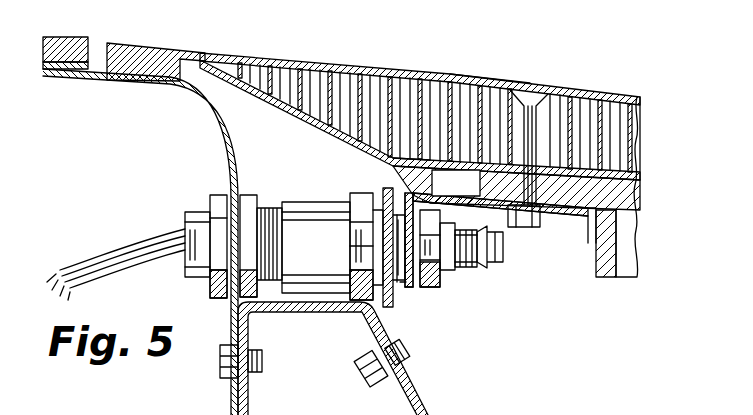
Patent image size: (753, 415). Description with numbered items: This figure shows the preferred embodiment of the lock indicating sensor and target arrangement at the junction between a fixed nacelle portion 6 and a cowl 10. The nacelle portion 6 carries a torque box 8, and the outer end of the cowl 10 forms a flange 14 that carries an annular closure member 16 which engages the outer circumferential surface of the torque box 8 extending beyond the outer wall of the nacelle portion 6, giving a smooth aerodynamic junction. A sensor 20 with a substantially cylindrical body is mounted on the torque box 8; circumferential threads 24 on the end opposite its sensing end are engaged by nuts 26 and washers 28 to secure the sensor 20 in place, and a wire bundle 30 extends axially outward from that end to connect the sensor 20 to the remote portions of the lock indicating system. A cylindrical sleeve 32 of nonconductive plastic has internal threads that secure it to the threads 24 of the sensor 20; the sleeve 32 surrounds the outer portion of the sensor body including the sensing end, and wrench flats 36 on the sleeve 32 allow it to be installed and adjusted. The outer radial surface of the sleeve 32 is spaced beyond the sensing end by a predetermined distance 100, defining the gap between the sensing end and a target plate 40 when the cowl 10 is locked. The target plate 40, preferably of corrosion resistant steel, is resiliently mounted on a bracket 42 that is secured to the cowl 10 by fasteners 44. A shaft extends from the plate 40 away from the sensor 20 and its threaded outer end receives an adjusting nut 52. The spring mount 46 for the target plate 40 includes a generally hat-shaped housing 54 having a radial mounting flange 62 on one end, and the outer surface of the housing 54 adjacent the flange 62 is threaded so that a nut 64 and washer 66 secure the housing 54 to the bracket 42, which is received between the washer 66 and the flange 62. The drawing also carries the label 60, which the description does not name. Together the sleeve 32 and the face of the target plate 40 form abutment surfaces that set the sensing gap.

The fixed nacelle portion 6 is at (70, 47).
The torque box 8 is at (222, 137).
The cowl 10 is at (490, 82).
The flange 14 is at (203, 62).
The annular closure member 16 is at (160, 60).
The sensor 20 is at (285, 182).
The circumferential threads 24 is at (277, 210).
The nuts 26 is at (236, 195).
The washers 28 is at (257, 306).
The wire bundle 30 is at (150, 246).
The cylindrical sleeve 32 is at (322, 252).
The wrench flats 36 is at (363, 200).
The target plate 40 is at (400, 190).
The bracket 42 is at (566, 215).
The fasteners 44 is at (533, 92).
The spring mount 46 is at (475, 292).
The adjusting nut 52 is at (495, 265).
The hat-shaped housing 54 is at (470, 275).
The bent bracket 60 is at (415, 192).
The radial mounting flange 62 is at (400, 288).
The nut 64 is at (458, 203).
The washer 66 is at (412, 288).
The predetermined distance 100 is at (480, 412).